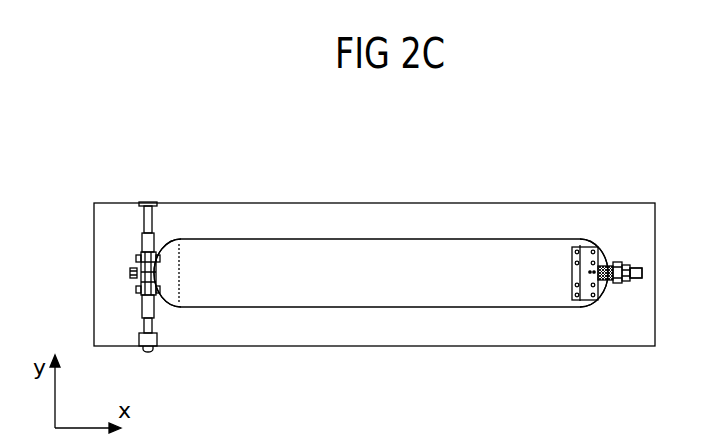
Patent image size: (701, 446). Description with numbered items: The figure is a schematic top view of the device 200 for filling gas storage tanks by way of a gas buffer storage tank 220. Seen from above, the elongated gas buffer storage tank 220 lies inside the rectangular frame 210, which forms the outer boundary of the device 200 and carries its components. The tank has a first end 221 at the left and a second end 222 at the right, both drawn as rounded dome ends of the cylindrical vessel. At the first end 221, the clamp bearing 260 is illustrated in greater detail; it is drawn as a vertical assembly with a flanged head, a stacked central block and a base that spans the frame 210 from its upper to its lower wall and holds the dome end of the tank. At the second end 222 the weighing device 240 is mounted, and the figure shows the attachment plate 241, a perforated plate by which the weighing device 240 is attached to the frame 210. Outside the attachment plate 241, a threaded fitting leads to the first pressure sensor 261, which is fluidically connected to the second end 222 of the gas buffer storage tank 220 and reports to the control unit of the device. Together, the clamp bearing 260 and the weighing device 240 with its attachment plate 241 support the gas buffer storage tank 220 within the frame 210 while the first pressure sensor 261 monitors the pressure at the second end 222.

The device 200 is at (360, 144).
The frame 210 is at (619, 202).
The gas buffer storage tank 220 is at (400, 282).
The first dome end of tank 221 is at (174, 228).
The second end 222 is at (587, 228).
The weighing device 240 is at (618, 252).
The attachment plate 241 is at (572, 272).
The clamp bearing 260 is at (145, 202).
The first pressure sensor 261 is at (635, 284).